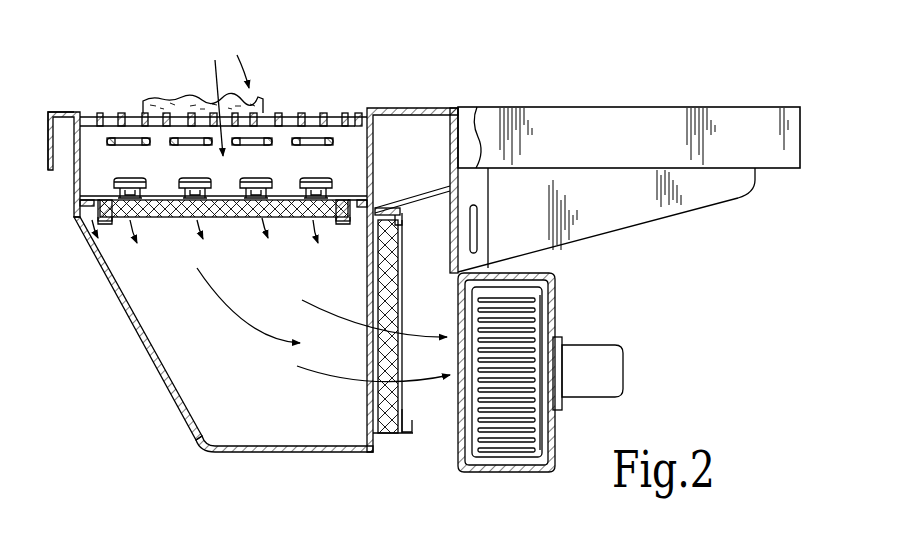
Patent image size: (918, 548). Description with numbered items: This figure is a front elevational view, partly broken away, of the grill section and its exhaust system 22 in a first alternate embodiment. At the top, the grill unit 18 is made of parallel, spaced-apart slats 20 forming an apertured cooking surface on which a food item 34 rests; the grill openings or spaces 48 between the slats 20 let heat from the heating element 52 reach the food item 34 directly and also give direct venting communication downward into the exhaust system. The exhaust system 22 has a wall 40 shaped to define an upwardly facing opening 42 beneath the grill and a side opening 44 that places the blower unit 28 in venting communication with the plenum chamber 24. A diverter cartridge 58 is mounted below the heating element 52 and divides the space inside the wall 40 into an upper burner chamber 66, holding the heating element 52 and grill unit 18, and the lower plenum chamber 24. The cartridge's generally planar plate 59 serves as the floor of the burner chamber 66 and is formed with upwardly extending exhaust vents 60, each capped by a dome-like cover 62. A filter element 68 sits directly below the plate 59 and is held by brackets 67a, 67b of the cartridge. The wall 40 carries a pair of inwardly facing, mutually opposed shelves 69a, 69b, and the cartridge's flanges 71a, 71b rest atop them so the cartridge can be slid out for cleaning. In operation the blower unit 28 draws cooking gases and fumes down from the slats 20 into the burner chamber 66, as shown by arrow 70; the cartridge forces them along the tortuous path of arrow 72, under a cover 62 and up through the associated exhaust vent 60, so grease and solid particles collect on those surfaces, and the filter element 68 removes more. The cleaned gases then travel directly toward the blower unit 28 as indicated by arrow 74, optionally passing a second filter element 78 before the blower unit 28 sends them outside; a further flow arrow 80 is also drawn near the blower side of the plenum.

The grill unit 18 is at (342, 79).
The slats 20 is at (348, 112).
The exhaust system 22 is at (125, 331).
The plenum chamber 24 is at (222, 419).
The blower unit 28 is at (557, 425).
The food item 34 is at (181, 98).
The wall 40 is at (160, 376).
The upwardly facing opening 42 is at (83, 114).
The side opening 44 is at (376, 404).
The grill openings or spaces 48 is at (308, 120).
The heating element 52 is at (318, 132).
The diverter cartridge 58 is at (115, 169).
The generally planar plate 59 is at (220, 216).
The exhaust vents 60 is at (148, 190).
The dome-like covers 62 is at (133, 188).
The upper burner chamber 66 is at (341, 170).
The bracket 67a is at (113, 222).
The bracket 67b is at (343, 215).
The filter element 68 is at (276, 213).
The shelf 69a is at (86, 207).
The shelf 69b is at (363, 208).
The arrow 70 is at (128, 158).
The flange 71a is at (92, 197).
The flange 71b is at (350, 197).
The arrow 72 is at (198, 208).
The arrow 74 is at (268, 328).
The second filter element 78 is at (412, 420).
The air flow path 80 is at (443, 418).